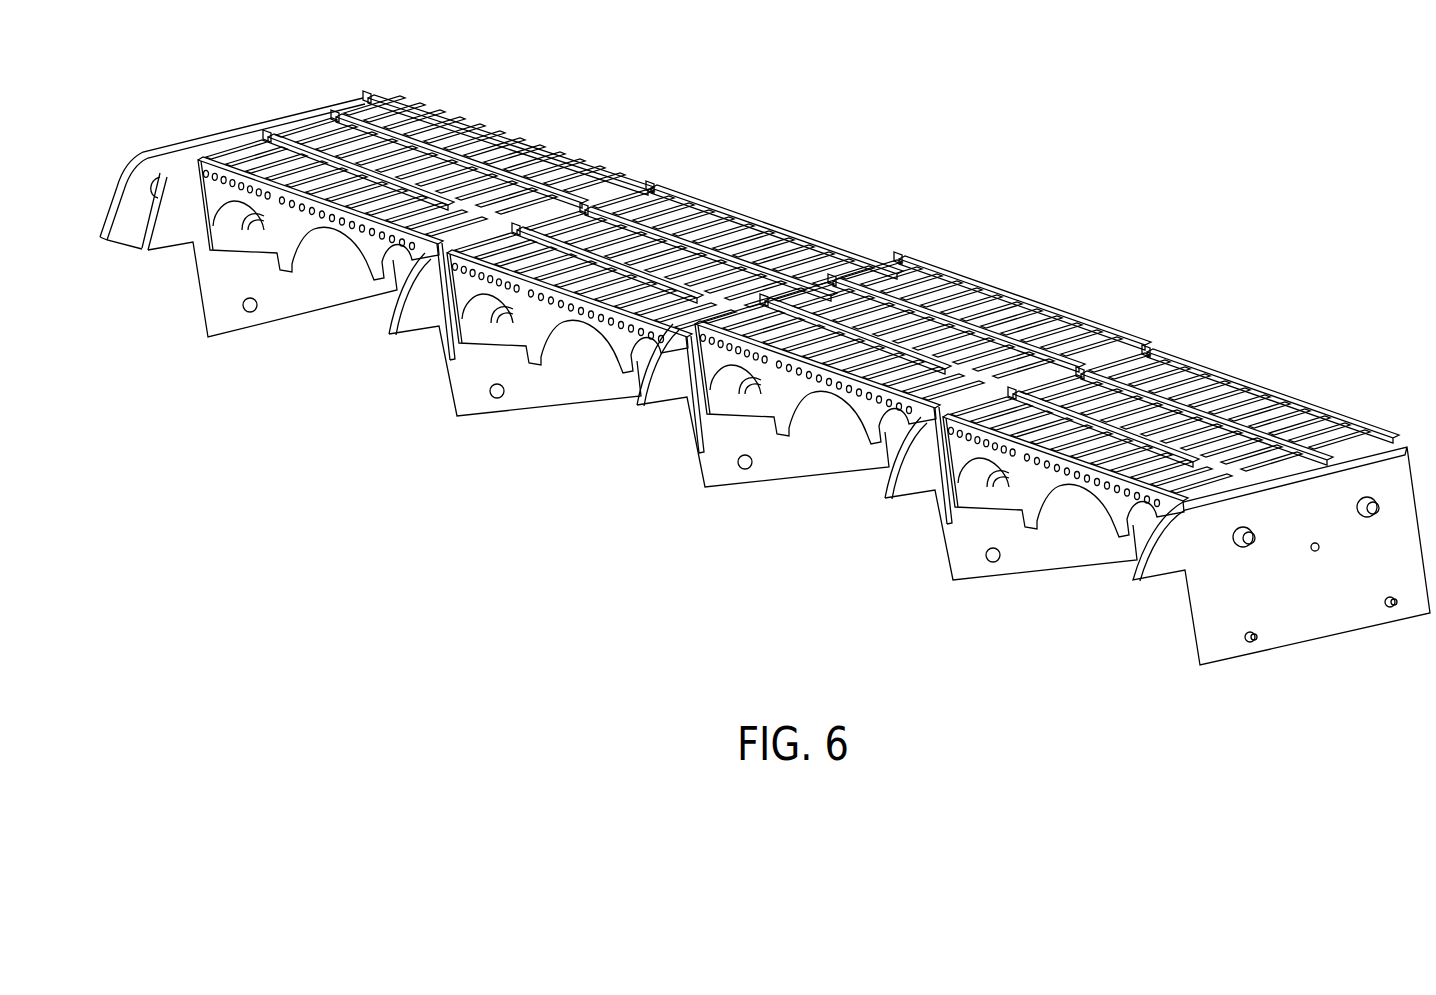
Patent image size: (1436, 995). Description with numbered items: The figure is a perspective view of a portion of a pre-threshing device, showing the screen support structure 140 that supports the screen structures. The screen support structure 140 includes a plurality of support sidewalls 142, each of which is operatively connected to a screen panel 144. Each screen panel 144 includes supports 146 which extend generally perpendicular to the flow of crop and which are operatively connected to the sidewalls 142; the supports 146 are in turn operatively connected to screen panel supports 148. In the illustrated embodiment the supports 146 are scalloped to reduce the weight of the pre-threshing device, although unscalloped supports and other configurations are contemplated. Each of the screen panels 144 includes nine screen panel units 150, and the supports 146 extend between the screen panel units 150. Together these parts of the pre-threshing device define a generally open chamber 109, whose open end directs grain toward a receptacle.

The open chamber 109 is at (607, 487).
The screen support structure 140 is at (972, 592).
The support sidewall 142 is at (276, 305).
The screen panel 144 is at (520, 122).
The support 146 is at (688, 222).
The screen panel support 148 is at (1040, 333).
The screen panel unit 150 is at (294, 126).